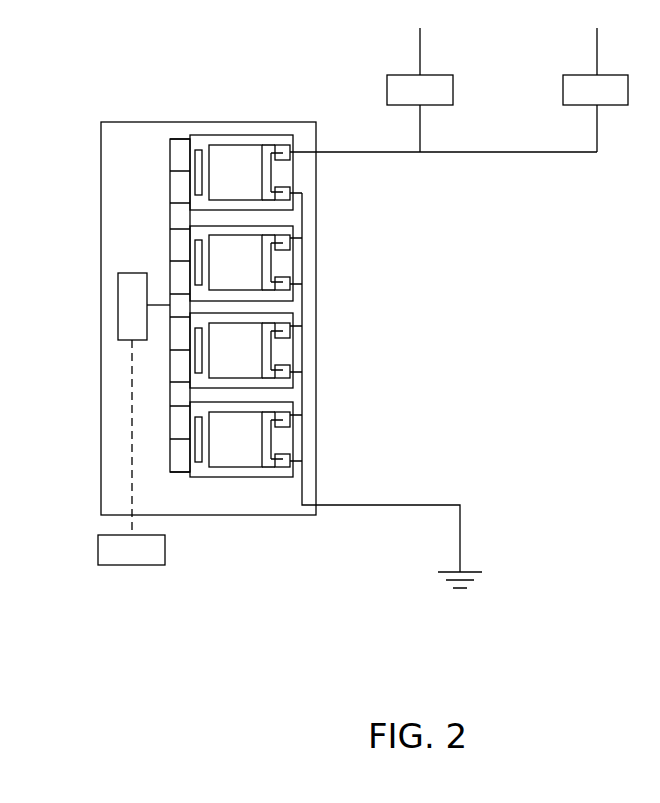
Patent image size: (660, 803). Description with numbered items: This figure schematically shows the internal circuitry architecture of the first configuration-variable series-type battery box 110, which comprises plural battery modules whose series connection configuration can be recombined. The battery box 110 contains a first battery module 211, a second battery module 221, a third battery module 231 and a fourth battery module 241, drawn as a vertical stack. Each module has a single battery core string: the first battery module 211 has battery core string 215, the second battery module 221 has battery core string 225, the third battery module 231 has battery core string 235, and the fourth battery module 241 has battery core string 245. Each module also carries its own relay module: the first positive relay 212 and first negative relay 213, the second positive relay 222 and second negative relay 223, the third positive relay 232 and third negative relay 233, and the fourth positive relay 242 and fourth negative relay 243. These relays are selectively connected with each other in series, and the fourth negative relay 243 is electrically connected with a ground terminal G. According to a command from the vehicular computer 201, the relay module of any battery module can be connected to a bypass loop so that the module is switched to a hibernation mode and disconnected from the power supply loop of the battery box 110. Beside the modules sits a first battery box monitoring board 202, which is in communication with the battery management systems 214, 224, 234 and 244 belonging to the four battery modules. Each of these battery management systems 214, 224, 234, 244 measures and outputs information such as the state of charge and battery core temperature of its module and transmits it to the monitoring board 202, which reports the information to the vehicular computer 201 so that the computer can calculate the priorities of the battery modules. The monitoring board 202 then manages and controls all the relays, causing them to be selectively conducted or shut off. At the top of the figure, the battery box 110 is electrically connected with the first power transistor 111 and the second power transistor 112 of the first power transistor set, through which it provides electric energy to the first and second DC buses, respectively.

The first configuration-variable series-type battery box 110 is at (287, 120).
The first power transistor of the first power transistor set 111 is at (420, 90).
The second power transistor of the first power transistor set 112 is at (459, 90).
The vehicular computer 201 is at (130, 568).
The first battery box monitoring board 202 is at (116, 304).
The first battery module 211 is at (206, 133).
The first positive relay 212 is at (292, 153).
The first negative relay 213 is at (292, 190).
The battery management system 214 is at (191, 167).
The single battery core string 215 is at (208, 144).
The second battery module 221 is at (205, 224).
The second positive relay 222 is at (292, 240).
The second negative relay 223 is at (292, 279).
The battery management system 224 is at (191, 256).
The single battery core string 225 is at (208, 233).
The third battery module 231 is at (204, 389).
The third positive relay 232 is at (292, 333).
The third negative relay 233 is at (292, 367).
The battery management system 234 is at (191, 335).
The single battery core string 235 is at (206, 371).
The fourth battery module 241 is at (204, 479).
The fourth positive relay 242 is at (292, 416).
The fourth negative relay 243 is at (292, 455).
The battery management system 244 is at (191, 427).
The single battery core string 245 is at (207, 458).